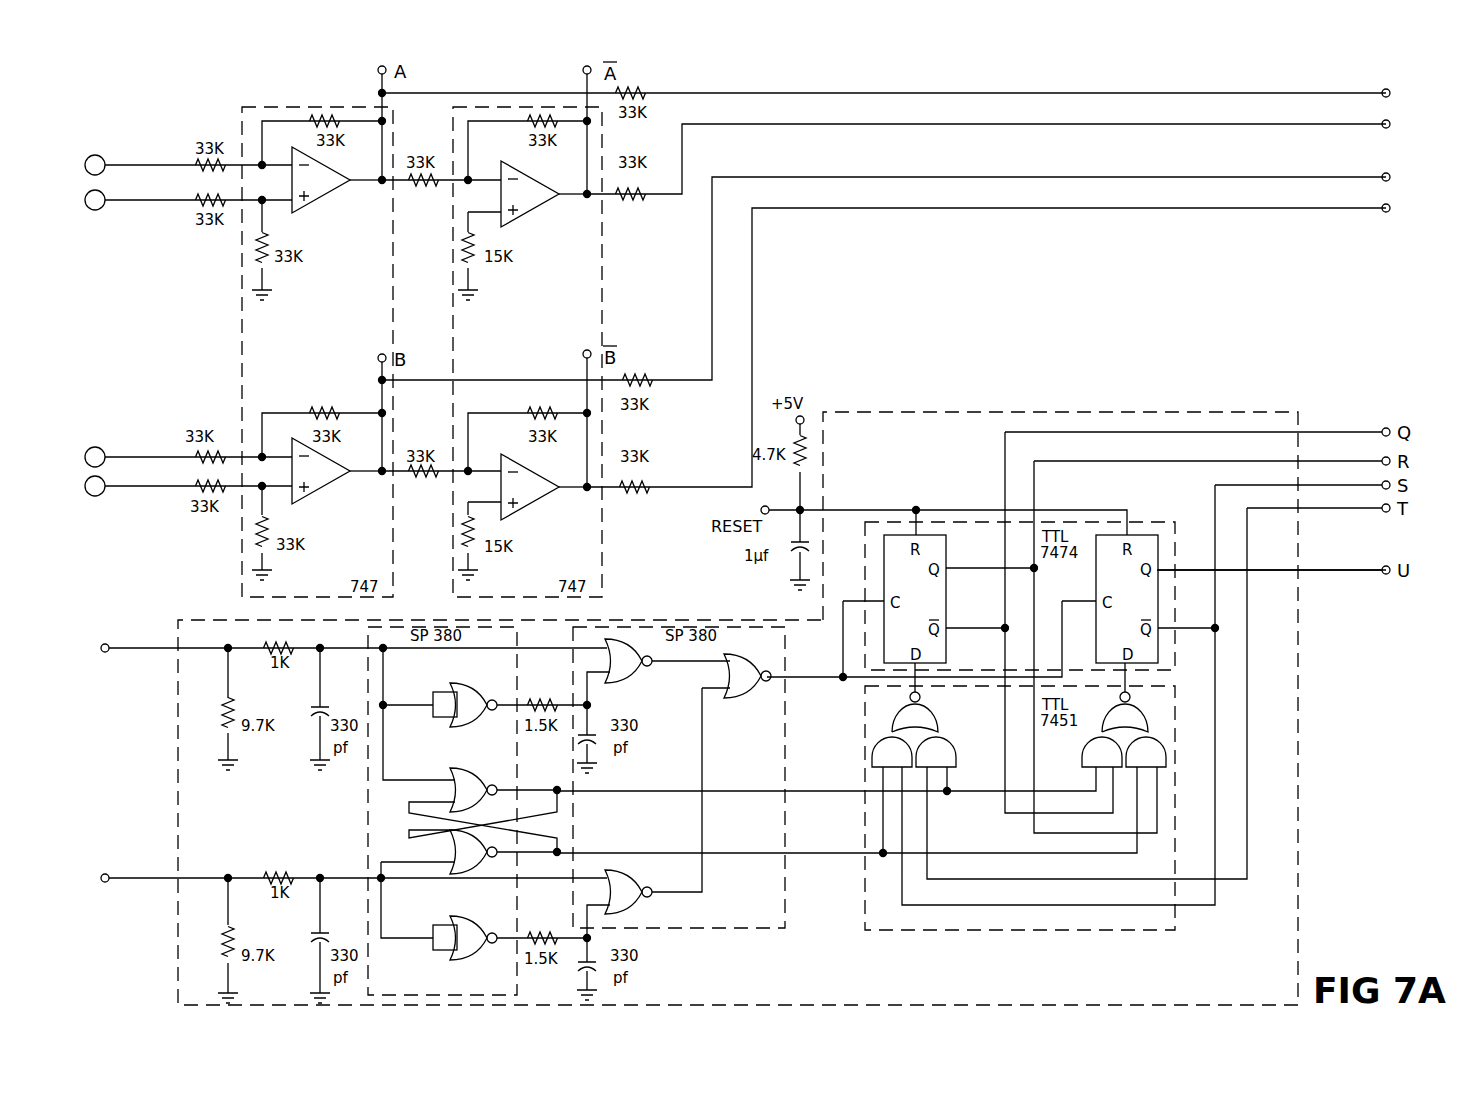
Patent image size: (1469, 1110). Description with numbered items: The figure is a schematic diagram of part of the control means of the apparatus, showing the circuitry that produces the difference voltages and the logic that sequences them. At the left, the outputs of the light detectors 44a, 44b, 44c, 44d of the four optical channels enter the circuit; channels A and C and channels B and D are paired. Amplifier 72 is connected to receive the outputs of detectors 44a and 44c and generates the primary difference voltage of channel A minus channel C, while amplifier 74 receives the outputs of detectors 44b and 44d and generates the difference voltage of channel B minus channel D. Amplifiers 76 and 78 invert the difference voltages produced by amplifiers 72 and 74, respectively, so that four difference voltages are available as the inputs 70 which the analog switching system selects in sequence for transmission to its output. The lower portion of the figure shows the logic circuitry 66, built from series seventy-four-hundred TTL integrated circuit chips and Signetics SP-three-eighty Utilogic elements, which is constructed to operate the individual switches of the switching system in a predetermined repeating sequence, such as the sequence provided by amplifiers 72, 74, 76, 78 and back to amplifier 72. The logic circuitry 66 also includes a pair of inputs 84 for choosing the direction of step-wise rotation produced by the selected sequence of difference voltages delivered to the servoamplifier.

The light detector 44a is at (104, 157).
The light detector 44b is at (103, 209).
The light detector 44c is at (104, 449).
The light detector 44d is at (103, 495).
The amplifier 72 is at (326, 201).
The amplifier 74 is at (326, 492).
The amplifier 76 is at (535, 215).
The amplifier 78 is at (535, 508).
The inputs 70 is at (1408, 73).
The pair of inputs 84 is at (96, 632).
The logic circuitry 66 is at (1298, 848).